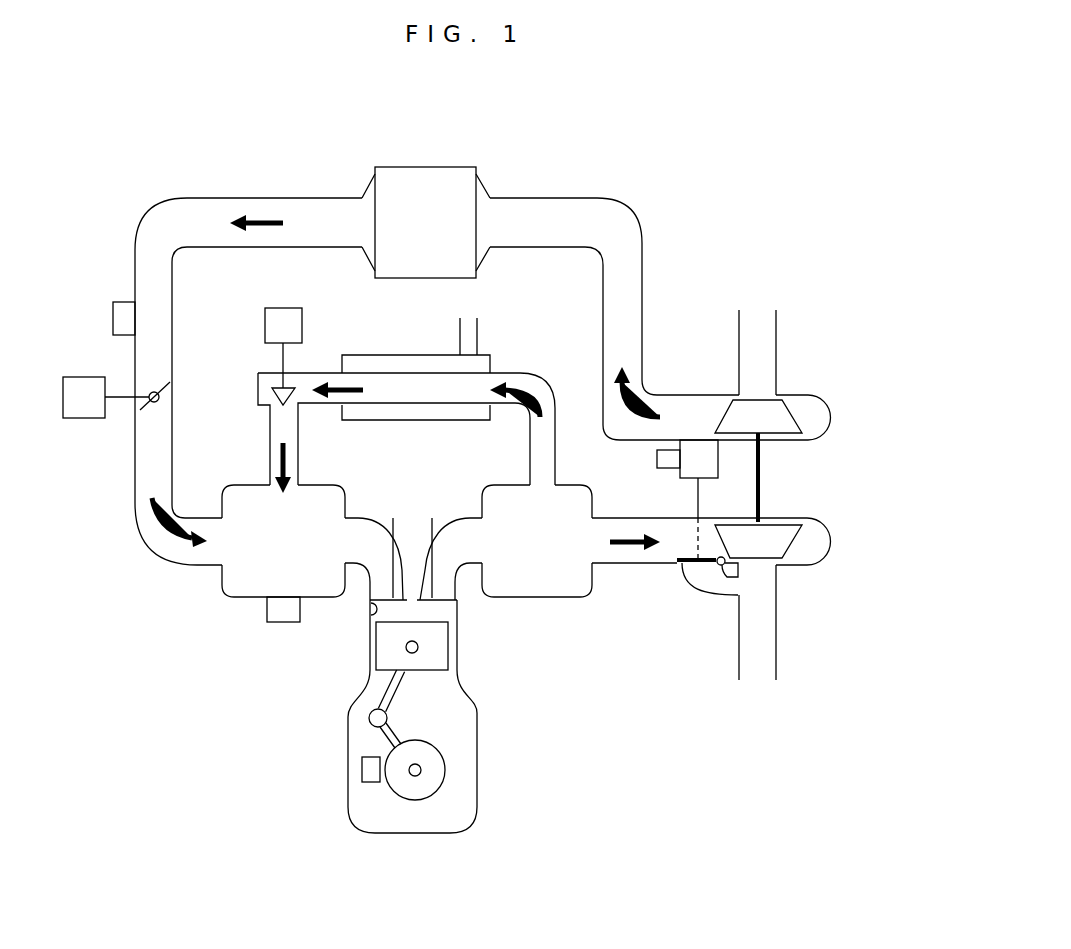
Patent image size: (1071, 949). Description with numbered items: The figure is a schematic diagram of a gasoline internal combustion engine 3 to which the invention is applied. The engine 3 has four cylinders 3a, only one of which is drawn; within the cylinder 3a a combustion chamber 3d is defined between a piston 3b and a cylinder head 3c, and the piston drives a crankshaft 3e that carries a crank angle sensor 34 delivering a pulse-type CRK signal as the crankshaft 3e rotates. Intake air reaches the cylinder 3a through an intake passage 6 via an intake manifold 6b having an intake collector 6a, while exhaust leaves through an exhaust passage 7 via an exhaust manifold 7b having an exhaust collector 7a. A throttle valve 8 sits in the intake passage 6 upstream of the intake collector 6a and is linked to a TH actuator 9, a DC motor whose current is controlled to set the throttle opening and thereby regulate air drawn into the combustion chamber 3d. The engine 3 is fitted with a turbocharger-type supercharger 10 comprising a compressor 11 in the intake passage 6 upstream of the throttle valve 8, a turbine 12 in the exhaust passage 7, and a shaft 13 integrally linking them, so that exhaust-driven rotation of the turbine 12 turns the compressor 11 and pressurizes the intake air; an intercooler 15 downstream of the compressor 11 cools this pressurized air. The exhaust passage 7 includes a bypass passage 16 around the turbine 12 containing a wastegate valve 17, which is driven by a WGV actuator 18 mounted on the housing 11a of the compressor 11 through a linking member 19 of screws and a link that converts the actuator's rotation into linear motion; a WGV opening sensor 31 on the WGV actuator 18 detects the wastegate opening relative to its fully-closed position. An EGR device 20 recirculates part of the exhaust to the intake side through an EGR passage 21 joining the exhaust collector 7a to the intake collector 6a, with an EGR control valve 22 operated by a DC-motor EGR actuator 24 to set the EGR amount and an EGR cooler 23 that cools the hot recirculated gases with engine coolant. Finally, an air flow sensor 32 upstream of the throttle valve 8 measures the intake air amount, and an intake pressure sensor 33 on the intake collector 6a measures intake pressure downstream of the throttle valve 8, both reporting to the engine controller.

The internal combustion engine 3 is at (503, 714).
The cylinder 3a is at (469, 662).
The piston 3b is at (376, 660).
The cylinder head 3c is at (456, 598).
The combustion chamber 3d is at (370, 610).
The crankshaft 3e is at (421, 768).
The intake passage 6 is at (136, 487).
The intake collector 6a is at (320, 485).
The intake manifold 6b is at (360, 512).
The exhaust passage 7 is at (612, 565).
The exhaust collector 7a is at (508, 485).
The exhaust manifold 7b is at (470, 512).
The throttle valve 8 is at (143, 412).
The TH actuator 9 is at (85, 377).
The supercharger 10 is at (800, 389).
The compressor 11 is at (782, 418).
The housing 11a is at (832, 427).
The turbine 12 is at (782, 540).
The shaft 13 is at (760, 482).
The intercooler 15 is at (432, 175).
The bypass passage 16 is at (735, 600).
The wastegate valve 17 is at (688, 565).
The WGV actuator 18 is at (718, 468).
The linking member 19 is at (698, 492).
The EGR device 20 is at (518, 345).
The EGR passage 21 is at (545, 380).
The EGR control valve 22 is at (279, 406).
The EGR cooler 23 is at (413, 355).
The EGR actuator 24 is at (265, 320).
The WGV opening sensor 31 is at (657, 457).
The air flow sensor 32 is at (113, 310).
The intake pressure sensor 33 is at (275, 622).
The crank angle sensor 34 is at (362, 770).